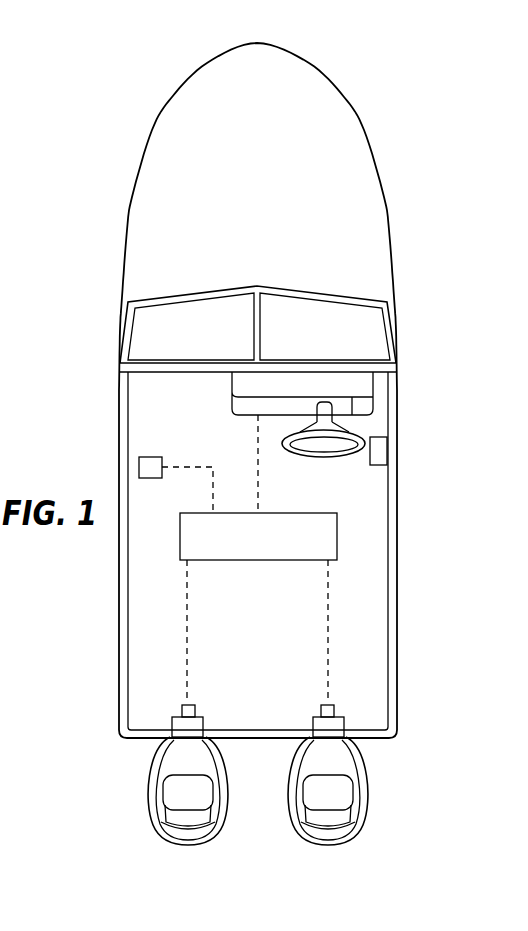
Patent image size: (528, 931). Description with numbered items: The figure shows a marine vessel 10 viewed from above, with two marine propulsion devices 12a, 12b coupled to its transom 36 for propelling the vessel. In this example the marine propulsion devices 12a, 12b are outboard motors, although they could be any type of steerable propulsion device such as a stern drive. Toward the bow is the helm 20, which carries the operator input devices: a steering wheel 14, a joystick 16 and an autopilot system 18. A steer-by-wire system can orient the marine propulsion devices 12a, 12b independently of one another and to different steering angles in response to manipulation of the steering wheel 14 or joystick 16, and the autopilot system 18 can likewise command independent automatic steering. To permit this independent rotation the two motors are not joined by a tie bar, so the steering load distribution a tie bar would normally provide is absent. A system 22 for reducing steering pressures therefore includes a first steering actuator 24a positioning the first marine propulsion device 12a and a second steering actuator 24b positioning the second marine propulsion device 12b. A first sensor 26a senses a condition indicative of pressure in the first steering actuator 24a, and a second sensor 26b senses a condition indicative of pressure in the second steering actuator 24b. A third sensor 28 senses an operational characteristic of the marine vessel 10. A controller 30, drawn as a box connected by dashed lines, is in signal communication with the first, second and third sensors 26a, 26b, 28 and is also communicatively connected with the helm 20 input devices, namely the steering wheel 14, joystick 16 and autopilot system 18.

The marine vessel 10 is at (385, 202).
The first marine propulsion device 12a is at (163, 832).
The second marine propulsion device 12b is at (352, 832).
The steering wheel 14 is at (323, 457).
The joystick 16 is at (387, 453).
The autopilot system 18 is at (363, 412).
The helm 20 is at (367, 428).
The system for reducing steering pressures 22 is at (170, 643).
The first steering actuator 24a is at (182, 738).
The second steering actuator 24b is at (344, 728).
The first sensor 26a is at (182, 707).
The second sensor 26b is at (334, 707).
The third sensor 28 is at (139, 467).
The controller 30 is at (337, 536).
The transom 36 is at (243, 742).